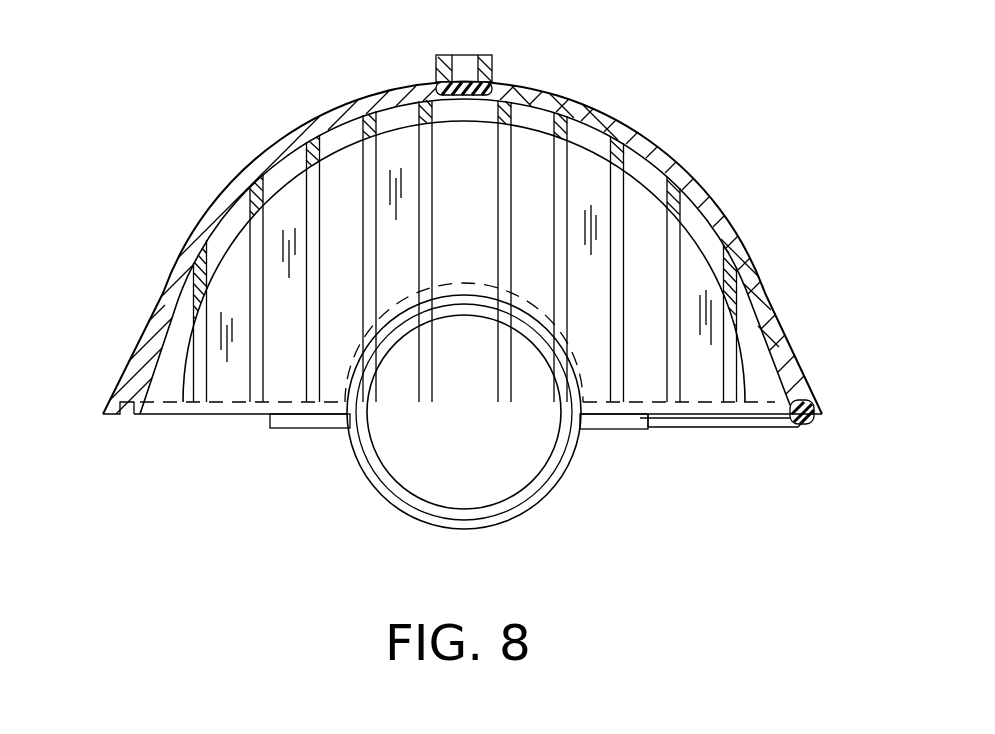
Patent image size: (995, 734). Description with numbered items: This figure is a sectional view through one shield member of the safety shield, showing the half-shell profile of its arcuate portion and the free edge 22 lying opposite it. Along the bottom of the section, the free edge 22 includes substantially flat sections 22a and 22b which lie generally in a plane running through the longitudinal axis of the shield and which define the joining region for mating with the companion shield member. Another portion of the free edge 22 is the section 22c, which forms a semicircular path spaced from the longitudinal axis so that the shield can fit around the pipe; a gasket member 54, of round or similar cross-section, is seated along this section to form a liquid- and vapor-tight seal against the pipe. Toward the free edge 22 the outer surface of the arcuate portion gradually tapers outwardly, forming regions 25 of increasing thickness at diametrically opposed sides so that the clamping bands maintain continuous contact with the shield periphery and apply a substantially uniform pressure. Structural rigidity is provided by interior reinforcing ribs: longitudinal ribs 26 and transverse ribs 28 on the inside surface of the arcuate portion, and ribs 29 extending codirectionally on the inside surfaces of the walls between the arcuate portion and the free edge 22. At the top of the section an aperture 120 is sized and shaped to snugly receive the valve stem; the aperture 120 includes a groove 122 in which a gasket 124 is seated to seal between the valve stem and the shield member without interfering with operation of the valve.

The free edge 22 is at (675, 451).
The flat section of free edge 22a is at (232, 416).
The flat section of free edge 22b is at (737, 420).
The semicircular section of free edge 22c is at (530, 325).
The region of increasing thickness 25 is at (146, 392).
The longitudinal rib 26 is at (343, 130).
The transverse rib 28 is at (605, 118).
The rib 29 is at (430, 184).
The gasket member 54 is at (485, 522).
The aperture 120 is at (466, 64).
The groove 122 is at (540, 96).
The gasket 124 is at (455, 62).